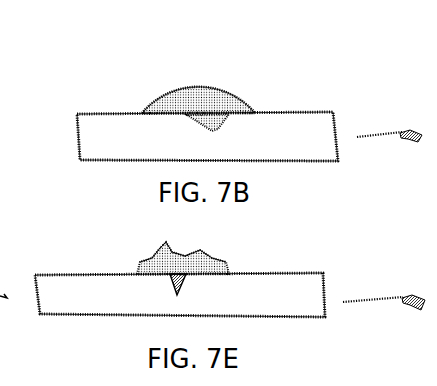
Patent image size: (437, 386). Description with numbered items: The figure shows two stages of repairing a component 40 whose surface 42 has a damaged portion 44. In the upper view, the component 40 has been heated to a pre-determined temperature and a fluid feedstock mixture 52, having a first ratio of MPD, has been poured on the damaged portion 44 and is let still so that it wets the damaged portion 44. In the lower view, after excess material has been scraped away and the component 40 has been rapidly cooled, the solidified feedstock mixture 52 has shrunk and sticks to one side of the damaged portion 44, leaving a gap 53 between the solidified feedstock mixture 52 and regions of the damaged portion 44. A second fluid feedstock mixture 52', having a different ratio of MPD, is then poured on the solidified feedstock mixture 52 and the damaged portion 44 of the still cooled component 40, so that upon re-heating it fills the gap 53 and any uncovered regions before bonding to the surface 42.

In FIG. 7B, the component 40 is at (221, 103).
In FIG. 7B, the surface 42 is at (323, 110).
In FIG. 7B, the damaged portion 44 is at (178, 130).
In FIG. 7B, the feedstock mixture 52 is at (228, 66).
In FIG. 7E, the feedstock mixture 52 is at (163, 258).
In FIG. 7E, the feedstock mixture 52' is at (211, 236).
In FIG. 7E, the gap 53 is at (185, 278).